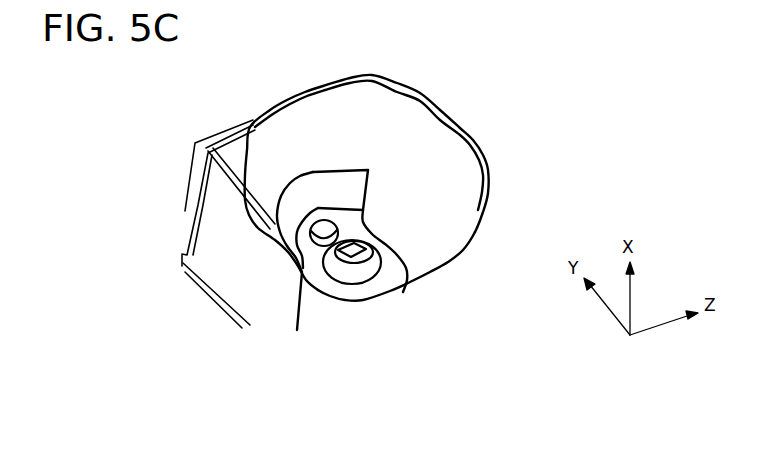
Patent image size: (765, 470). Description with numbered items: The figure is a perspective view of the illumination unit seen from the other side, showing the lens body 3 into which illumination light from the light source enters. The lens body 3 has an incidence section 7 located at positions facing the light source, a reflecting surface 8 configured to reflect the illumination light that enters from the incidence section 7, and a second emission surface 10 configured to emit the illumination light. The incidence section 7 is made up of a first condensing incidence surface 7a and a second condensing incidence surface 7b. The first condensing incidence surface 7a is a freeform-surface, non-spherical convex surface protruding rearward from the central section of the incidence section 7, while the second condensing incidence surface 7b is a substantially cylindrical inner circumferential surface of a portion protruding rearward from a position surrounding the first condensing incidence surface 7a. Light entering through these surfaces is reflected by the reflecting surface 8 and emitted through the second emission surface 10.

The lens body 3 is at (468, 100).
The reflecting surface 8 is at (447, 232).
The second emission surface 10 is at (307, 182).
The incidence section 7 is at (355, 310).
The first condensing incidence surface 7a is at (355, 258).
The second condensing incidence surface 7b is at (368, 270).